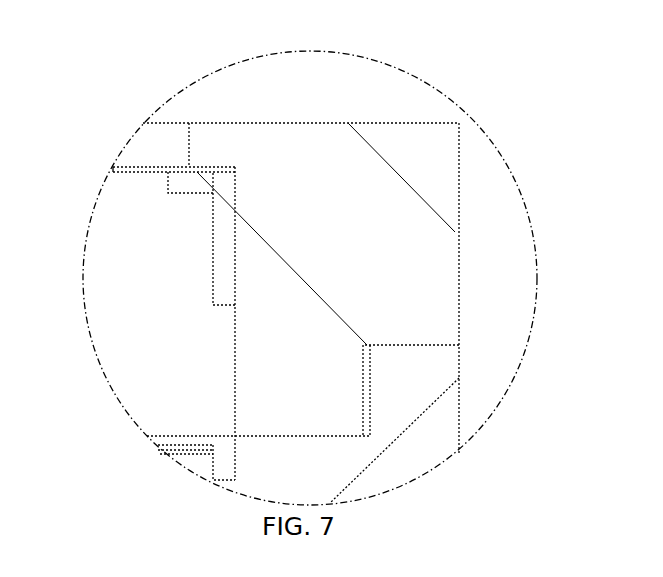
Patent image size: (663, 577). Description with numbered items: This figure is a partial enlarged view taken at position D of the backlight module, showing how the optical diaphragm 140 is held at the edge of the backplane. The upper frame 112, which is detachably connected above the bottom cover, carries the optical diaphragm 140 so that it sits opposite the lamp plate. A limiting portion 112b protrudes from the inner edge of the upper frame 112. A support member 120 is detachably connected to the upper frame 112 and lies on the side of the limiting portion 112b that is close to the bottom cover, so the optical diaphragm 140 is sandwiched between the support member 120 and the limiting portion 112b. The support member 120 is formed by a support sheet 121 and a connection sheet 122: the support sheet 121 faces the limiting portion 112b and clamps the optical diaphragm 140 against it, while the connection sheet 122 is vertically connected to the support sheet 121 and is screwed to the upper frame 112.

The position D is at (322, 37).
The upper frame 112 is at (385, 282).
The limiting portion 112b is at (217, 147).
The support member 120 is at (137, 326).
The support sheet 121 is at (182, 185).
The connection sheet 122 is at (222, 257).
The optical diaphragm 140 is at (142, 167).